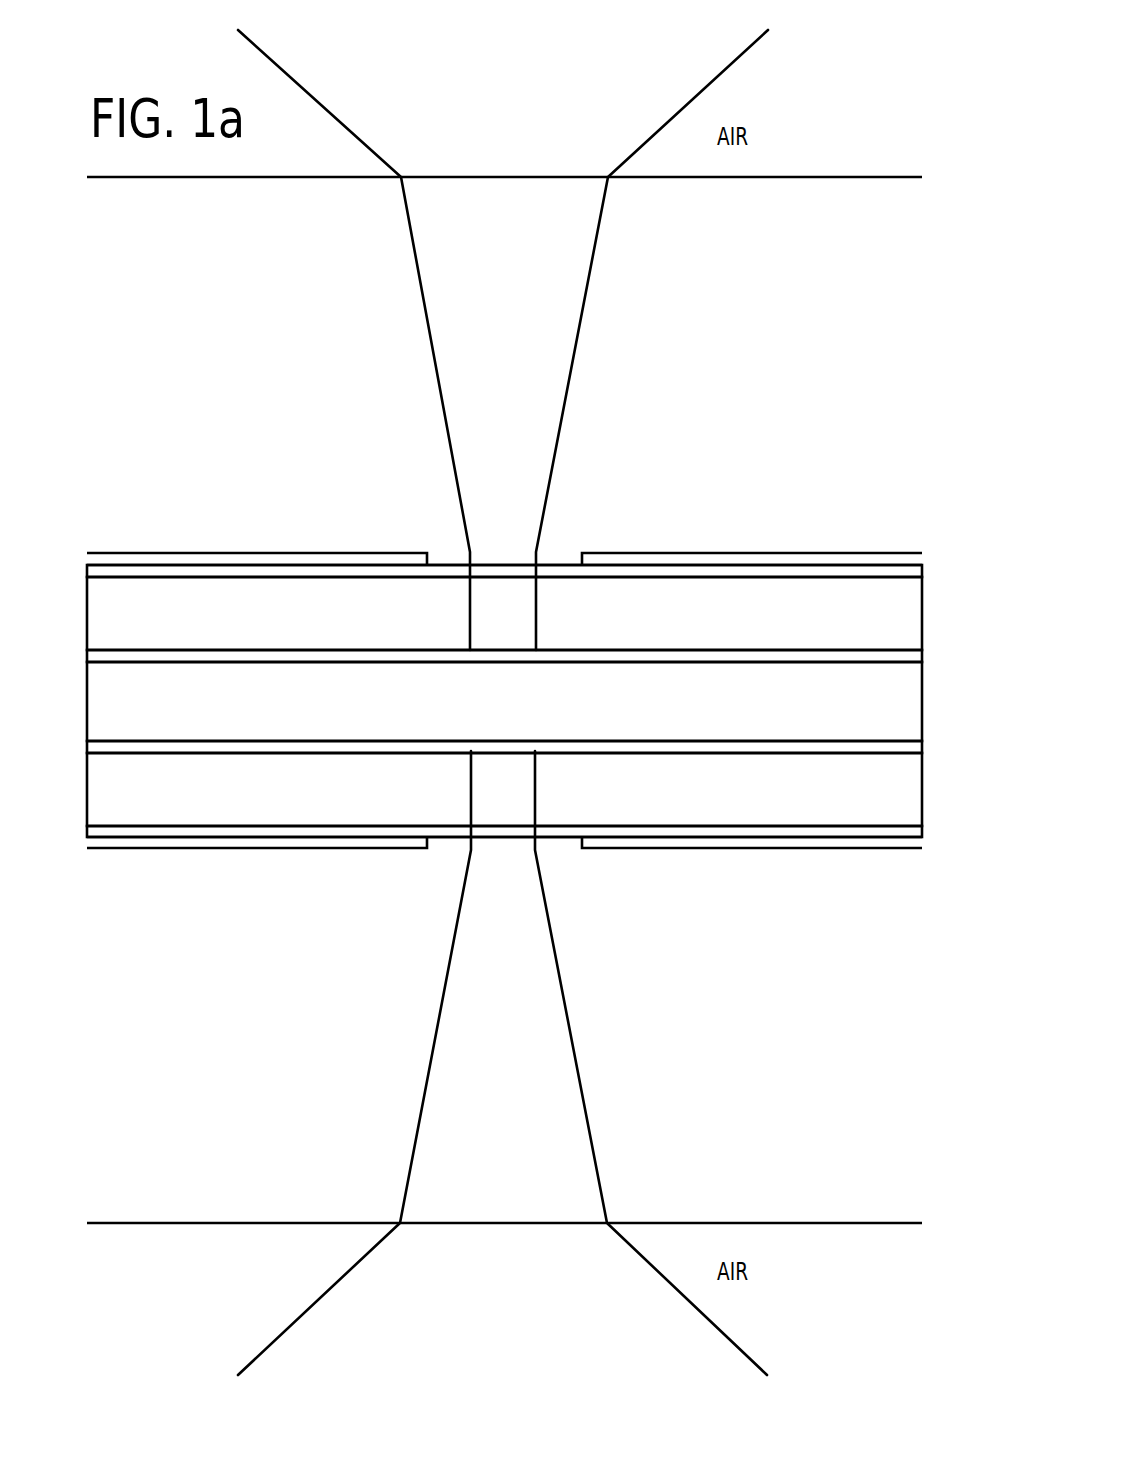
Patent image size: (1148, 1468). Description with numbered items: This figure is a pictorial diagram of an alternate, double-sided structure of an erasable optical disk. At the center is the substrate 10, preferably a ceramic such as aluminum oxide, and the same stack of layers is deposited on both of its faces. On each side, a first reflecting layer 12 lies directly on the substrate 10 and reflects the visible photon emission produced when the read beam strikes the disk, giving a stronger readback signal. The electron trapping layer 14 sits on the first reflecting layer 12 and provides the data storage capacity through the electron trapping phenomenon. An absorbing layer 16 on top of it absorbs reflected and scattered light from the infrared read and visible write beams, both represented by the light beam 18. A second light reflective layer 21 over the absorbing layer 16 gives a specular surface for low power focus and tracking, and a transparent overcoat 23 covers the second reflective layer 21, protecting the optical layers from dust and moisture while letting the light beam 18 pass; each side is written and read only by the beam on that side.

The substrate structure 10 is at (596, 714).
The first reflecting layer 12 is at (893, 778).
The electron trapping layer 14 is at (288, 812).
The absorbing layer 16 is at (875, 826).
The light beam 18 is at (519, 1350).
The second light reflective layer 21 is at (893, 875).
The transparent overcoat 23 is at (741, 363).